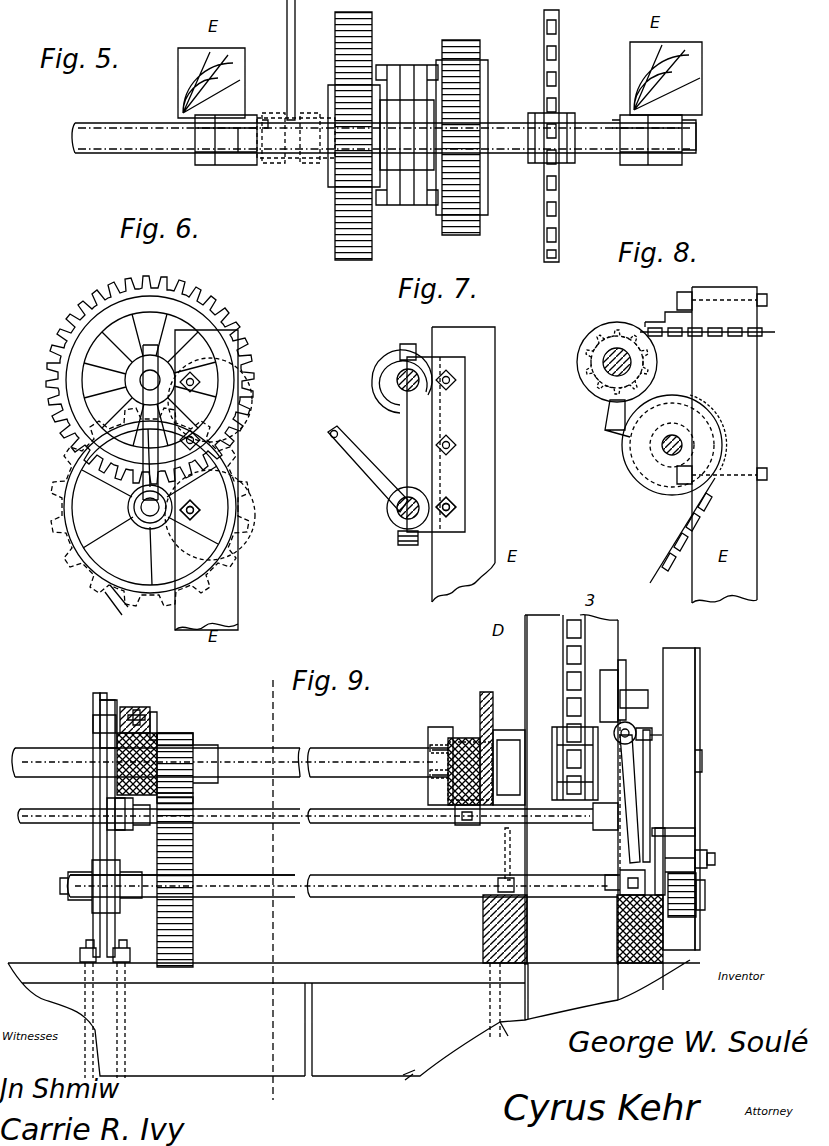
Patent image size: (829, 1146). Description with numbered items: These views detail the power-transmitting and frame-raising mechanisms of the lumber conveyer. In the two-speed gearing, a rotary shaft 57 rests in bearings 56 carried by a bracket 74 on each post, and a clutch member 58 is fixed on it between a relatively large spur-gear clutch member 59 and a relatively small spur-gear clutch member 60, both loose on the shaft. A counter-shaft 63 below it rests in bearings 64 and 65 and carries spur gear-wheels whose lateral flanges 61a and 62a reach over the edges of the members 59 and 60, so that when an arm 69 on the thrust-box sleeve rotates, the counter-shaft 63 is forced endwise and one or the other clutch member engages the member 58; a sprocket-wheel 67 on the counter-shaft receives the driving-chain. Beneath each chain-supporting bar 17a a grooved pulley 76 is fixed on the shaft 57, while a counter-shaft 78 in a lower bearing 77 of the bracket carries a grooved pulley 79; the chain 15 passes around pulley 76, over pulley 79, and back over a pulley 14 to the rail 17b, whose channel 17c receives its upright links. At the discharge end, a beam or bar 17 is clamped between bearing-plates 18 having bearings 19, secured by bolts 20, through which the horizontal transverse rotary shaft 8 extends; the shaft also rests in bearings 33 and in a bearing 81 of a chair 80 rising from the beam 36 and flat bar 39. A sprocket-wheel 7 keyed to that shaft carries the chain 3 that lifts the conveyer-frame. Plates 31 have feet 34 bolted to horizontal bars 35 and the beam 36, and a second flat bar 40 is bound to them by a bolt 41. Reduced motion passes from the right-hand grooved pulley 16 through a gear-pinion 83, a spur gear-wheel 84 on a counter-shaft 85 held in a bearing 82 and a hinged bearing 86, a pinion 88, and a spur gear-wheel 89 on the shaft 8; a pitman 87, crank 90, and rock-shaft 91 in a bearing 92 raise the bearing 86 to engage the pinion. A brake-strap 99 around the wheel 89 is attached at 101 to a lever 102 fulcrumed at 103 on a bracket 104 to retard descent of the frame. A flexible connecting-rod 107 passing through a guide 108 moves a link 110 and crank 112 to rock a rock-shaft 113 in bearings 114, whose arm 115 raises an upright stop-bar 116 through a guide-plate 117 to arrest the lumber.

In FIG. 9, the chain 3 is at (579, 697).
In FIG. 9, the sprocket-wheel 7 is at (555, 740).
In FIG. 9, the horizontal transverse rotary shaft 8 is at (425, 756).
In FIG. 7, the pulley 14 is at (392, 345).
In FIG. 9, the chain 15 is at (322, 726).
In FIG. 9, the grooved pulley 16 is at (107, 705).
In FIG. 9, the beam or bar 17 is at (455, 800).
In FIG. 9, the chain-supporting bar 17a is at (193, 798).
In FIG. 9, the longitudinally-channeled rail or strap 17b is at (160, 720).
In FIG. 9, the channel 17c is at (120, 715).
In FIG. 9, the bearing-plate 18 is at (432, 730).
In FIG. 9, the bearing 19 is at (160, 735).
In FIG. 9, the bolt 20 is at (400, 755).
In FIG. 9, the plate 31 is at (510, 840).
In FIG. 9, the bearing 33 is at (512, 728).
In FIG. 9, the lateral horizontal flange or foot 34 is at (518, 886).
In FIG. 9, the horizontal bar 35 is at (527, 935).
In FIG. 9, the beam 36 is at (668, 970).
In FIG. 9, the flat bar 39 is at (410, 968).
In FIG. 9, the flat bar 40 is at (477, 1001).
In FIG. 9, the bolt 41 is at (509, 1038).
In FIG. 5, the bearing 56 is at (250, 166).
In FIG. 6, the bearing 56 is at (158, 375).
In FIG. 7, the bearing 56 is at (422, 444).
In FIG. 5, the rotary shaft 57 is at (322, 150).
In FIG. 6, the rotary shaft 57 is at (152, 380).
In FIG. 7, the rotary shaft 57 is at (398, 383).
In FIG. 8, the rotary shaft 57 is at (606, 370).
In FIG. 5, the clutch member 58 is at (407, 124).
In FIG. 5, the spur-gear clutch member 59 is at (372, 40).
In FIG. 6, the spur-gear clutch member 59 is at (150, 371).
In FIG. 5, the spur-gear clutch member 60 is at (462, 48).
In FIG. 6, the spur-gear clutch member 60 is at (140, 325).
In FIG. 5, the lateral flange 61a is at (335, 185).
In FIG. 5, the lateral flange 62a is at (482, 210).
In FIG. 6, the lateral flange 62a is at (115, 553).
In FIG. 5, the counter-shaft 63 is at (596, 150).
In FIG. 6, the counter-shaft 63 is at (152, 507).
In FIG. 7, the counter-shaft 63 is at (396, 512).
In FIG. 6, the bearing 64 is at (192, 508).
In FIG. 7, the bearing 64 is at (433, 530).
In FIG. 7, the bearing 65 is at (400, 540).
In FIG. 5, the sprocket-wheel 67 is at (560, 82).
In FIG. 6, the sprocket-wheel 67 is at (130, 600).
In FIG. 5, the arm 69 is at (296, 28).
In FIG. 7, the arm 69 is at (362, 477).
In FIG. 8, the bracket 74 is at (684, 372).
In FIG. 8, the grooved pulley 76 is at (590, 357).
In FIG. 8, the horizontal bearing 77 is at (710, 415).
In FIG. 8, the counter-shaft 78 is at (665, 450).
In FIG. 8, the grooved pulley 79 is at (630, 455).
In FIG. 9, the chair 80 is at (95, 920).
In FIG. 9, the bearing 81 is at (93, 738).
In FIG. 9, the bearing 82 is at (100, 896).
In FIG. 9, the gear-pinion 83 is at (194, 735).
In FIG. 9, the spur gear-wheel 84 is at (194, 860).
In FIG. 9, the counter-shaft 85 is at (185, 864).
In FIG. 9, the bearing 86 is at (620, 885).
In FIG. 9, the pitman 87 is at (695, 808).
In FIG. 9, the pinion 88 is at (694, 915).
In FIG. 9, the spur gear-wheel 89 is at (700, 790).
In FIG. 9, the crank 90 is at (632, 745).
In FIG. 9, the rock-shaft 91 is at (628, 722).
In FIG. 9, the bearing 92 is at (652, 740).
In FIG. 9, the brake-strap 99 is at (690, 668).
In FIG. 9, the attachment point 101 is at (700, 855).
In FIG. 9, the lever 102 is at (708, 858).
In FIG. 9, the fulcrum 103 is at (712, 866).
In FIG. 9, the bracket 104 is at (705, 898).
In FIG. 9, the flexible connecting-rod 107 is at (640, 698).
In FIG. 9, the guide 108 is at (650, 732).
In FIG. 9, the link 110 is at (624, 680).
In FIG. 9, the crank 112 is at (606, 674).
In FIG. 9, the rock-shaft 113 is at (595, 818).
In FIG. 9, the bearing 114 is at (468, 826).
In FIG. 9, the arm 115 is at (115, 815).
In FIG. 9, the upright stop-bar 116 is at (100, 700).
In FIG. 9, the guide-plate 117 is at (93, 722).